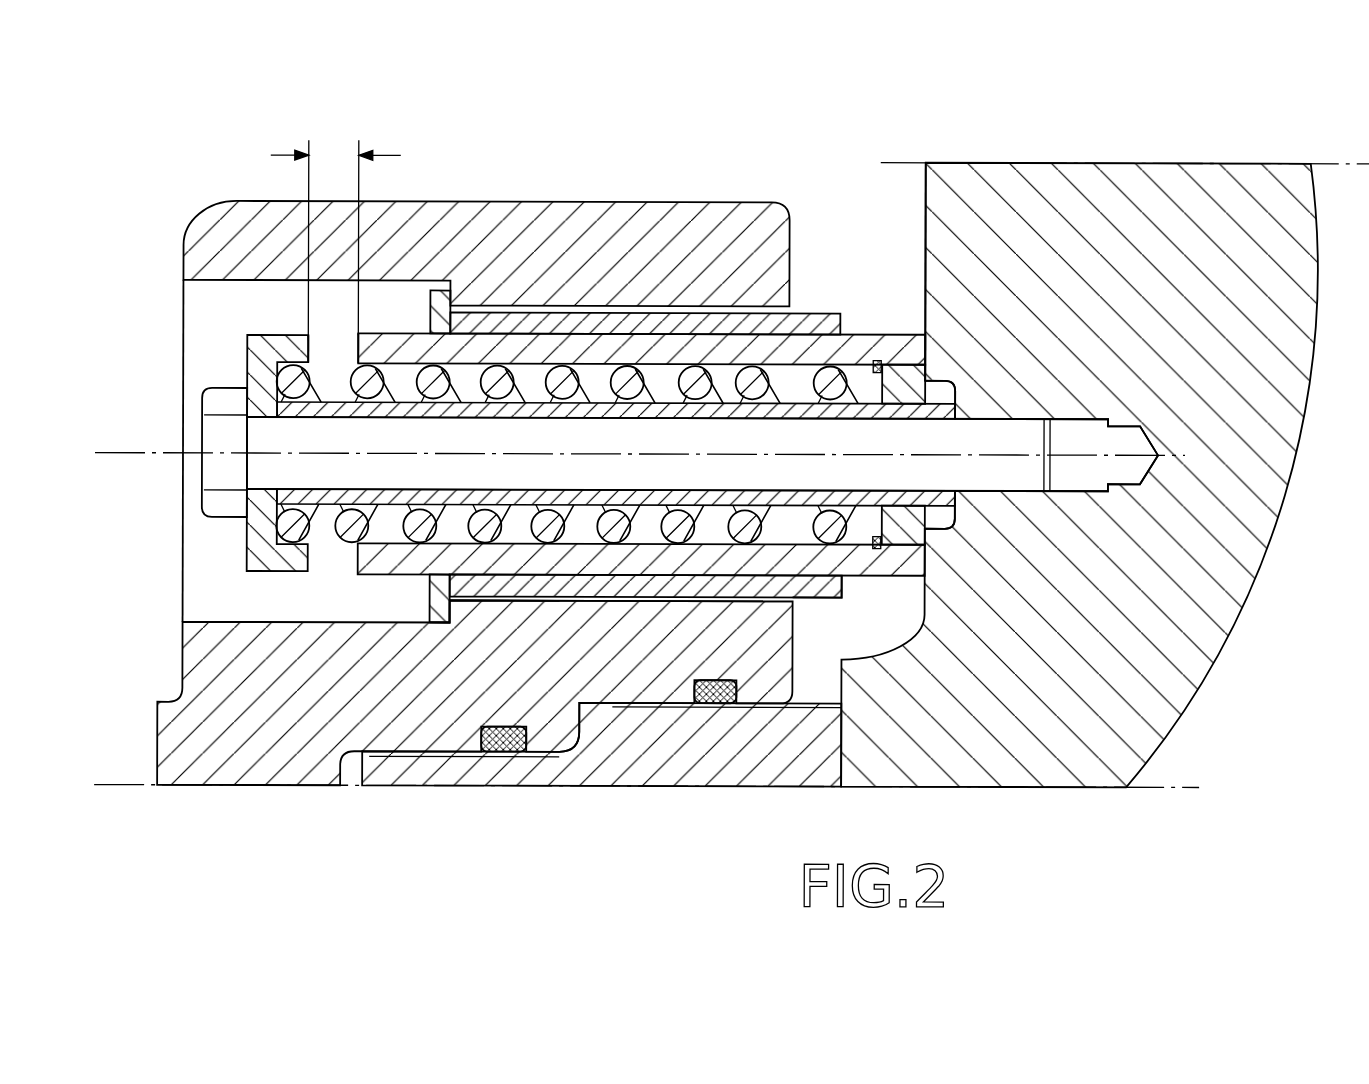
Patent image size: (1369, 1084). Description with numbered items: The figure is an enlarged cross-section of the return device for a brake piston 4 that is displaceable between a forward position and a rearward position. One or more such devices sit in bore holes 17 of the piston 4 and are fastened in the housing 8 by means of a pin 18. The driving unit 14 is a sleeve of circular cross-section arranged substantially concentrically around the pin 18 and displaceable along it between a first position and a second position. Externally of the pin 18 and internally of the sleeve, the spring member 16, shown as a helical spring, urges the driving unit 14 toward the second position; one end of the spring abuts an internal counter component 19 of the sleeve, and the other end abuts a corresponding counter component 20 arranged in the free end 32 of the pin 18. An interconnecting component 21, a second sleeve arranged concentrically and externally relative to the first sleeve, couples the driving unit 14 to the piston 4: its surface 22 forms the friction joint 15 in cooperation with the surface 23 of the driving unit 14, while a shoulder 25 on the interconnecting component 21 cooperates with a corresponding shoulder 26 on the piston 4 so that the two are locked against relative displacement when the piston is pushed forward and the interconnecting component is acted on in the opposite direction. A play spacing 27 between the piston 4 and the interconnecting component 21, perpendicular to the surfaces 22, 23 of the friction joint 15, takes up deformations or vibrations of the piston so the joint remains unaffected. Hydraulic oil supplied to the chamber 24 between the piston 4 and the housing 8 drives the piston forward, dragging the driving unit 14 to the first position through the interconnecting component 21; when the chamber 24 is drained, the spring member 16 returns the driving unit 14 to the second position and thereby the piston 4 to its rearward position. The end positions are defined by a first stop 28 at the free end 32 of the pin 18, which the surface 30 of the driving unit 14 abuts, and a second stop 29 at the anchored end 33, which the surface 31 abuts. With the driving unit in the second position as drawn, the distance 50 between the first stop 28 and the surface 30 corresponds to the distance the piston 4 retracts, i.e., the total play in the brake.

The piston 4 is at (211, 777).
The housing 8 is at (1148, 665).
The driving unit 14 is at (513, 338).
The friction joint 15 is at (815, 583).
The spring member 16 is at (706, 543).
The bore hole 17 is at (225, 300).
The pin 18 is at (897, 470).
The counter component 19 is at (875, 387).
The counter component 20 is at (255, 380).
The interconnecting component 21 is at (613, 586).
The surface 22 is at (728, 344).
The surface 23 is at (627, 334).
The chamber 24 is at (595, 730).
The shoulder 25 is at (428, 603).
The shoulder 26 is at (460, 613).
The play spacing 27 is at (440, 627).
The first stop 28 is at (308, 342).
The second stop 29 is at (927, 342).
The surface 30 is at (350, 340).
The surface 31 is at (926, 358).
The free end 32 is at (212, 557).
The anchored end 33 is at (1001, 516).
The distance 50 is at (348, 152).